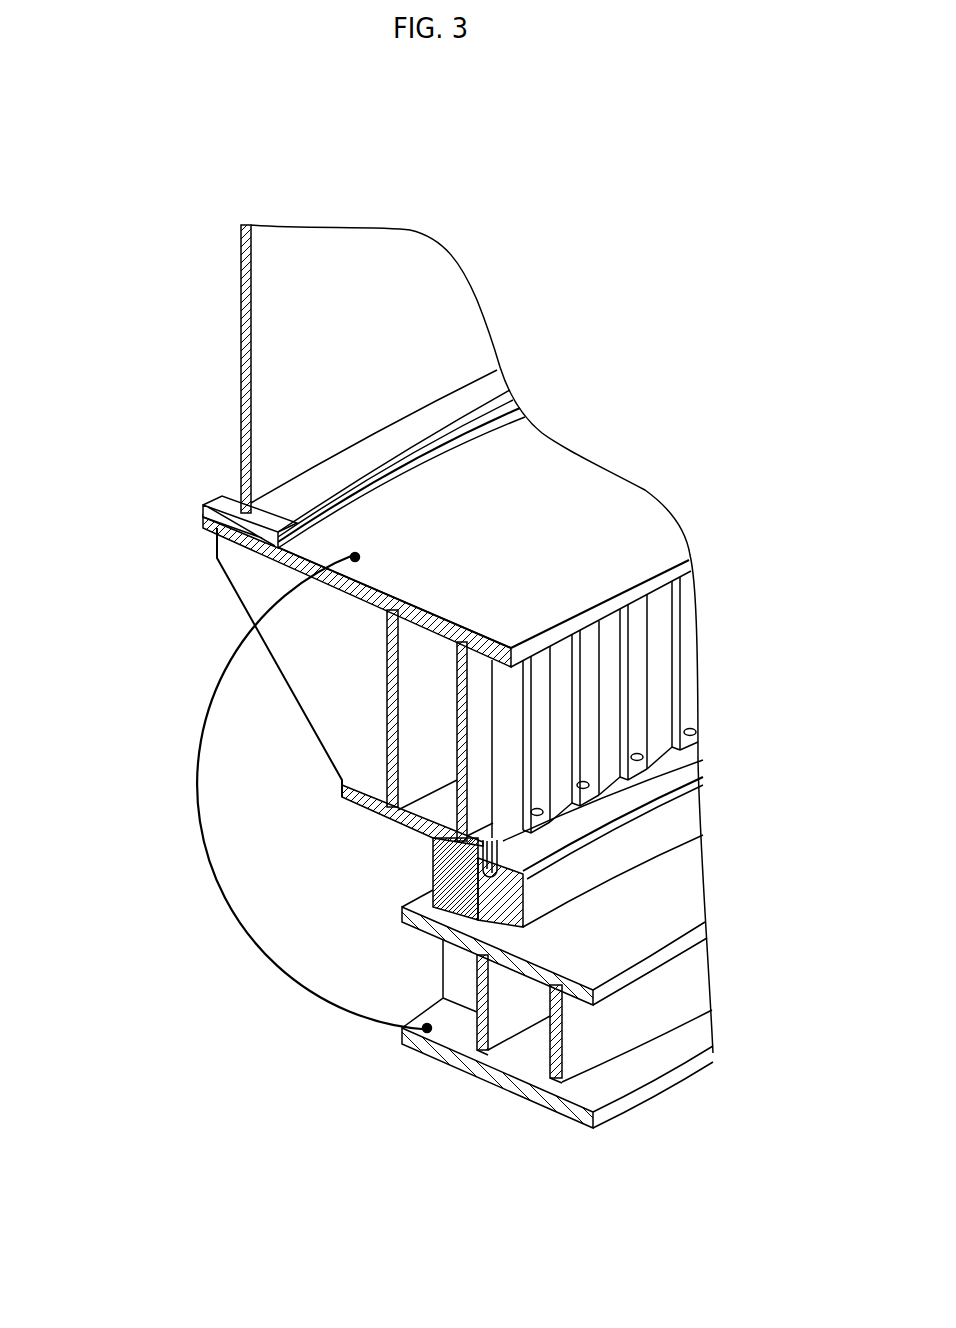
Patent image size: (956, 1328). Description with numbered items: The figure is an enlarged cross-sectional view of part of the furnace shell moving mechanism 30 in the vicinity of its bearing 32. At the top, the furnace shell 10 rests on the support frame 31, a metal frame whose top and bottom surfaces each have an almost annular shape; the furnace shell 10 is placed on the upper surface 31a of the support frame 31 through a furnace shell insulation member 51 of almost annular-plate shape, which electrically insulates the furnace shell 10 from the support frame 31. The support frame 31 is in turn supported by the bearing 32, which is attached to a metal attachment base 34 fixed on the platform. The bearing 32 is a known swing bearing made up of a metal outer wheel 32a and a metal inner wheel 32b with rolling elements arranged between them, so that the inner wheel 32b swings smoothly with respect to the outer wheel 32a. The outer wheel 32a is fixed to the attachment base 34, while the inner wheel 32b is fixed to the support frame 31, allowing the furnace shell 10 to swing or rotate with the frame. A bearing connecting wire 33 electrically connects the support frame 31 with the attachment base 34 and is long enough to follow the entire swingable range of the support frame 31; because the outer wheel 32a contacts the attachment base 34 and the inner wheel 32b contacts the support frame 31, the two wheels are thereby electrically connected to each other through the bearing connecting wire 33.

The furnace shell 10 is at (325, 285).
The furnace shell moving mechanism 30 is at (641, 252).
The support frame 31 is at (684, 562).
The upper surface 31a is at (560, 508).
The bearing 32 is at (377, 880).
The outer wheel 32a is at (435, 857).
The inner wheel 32b is at (480, 905).
The bearing connecting wire 33 is at (197, 805).
The attachment base 34 is at (452, 1062).
The furnace shell insulation member 51 is at (203, 517).